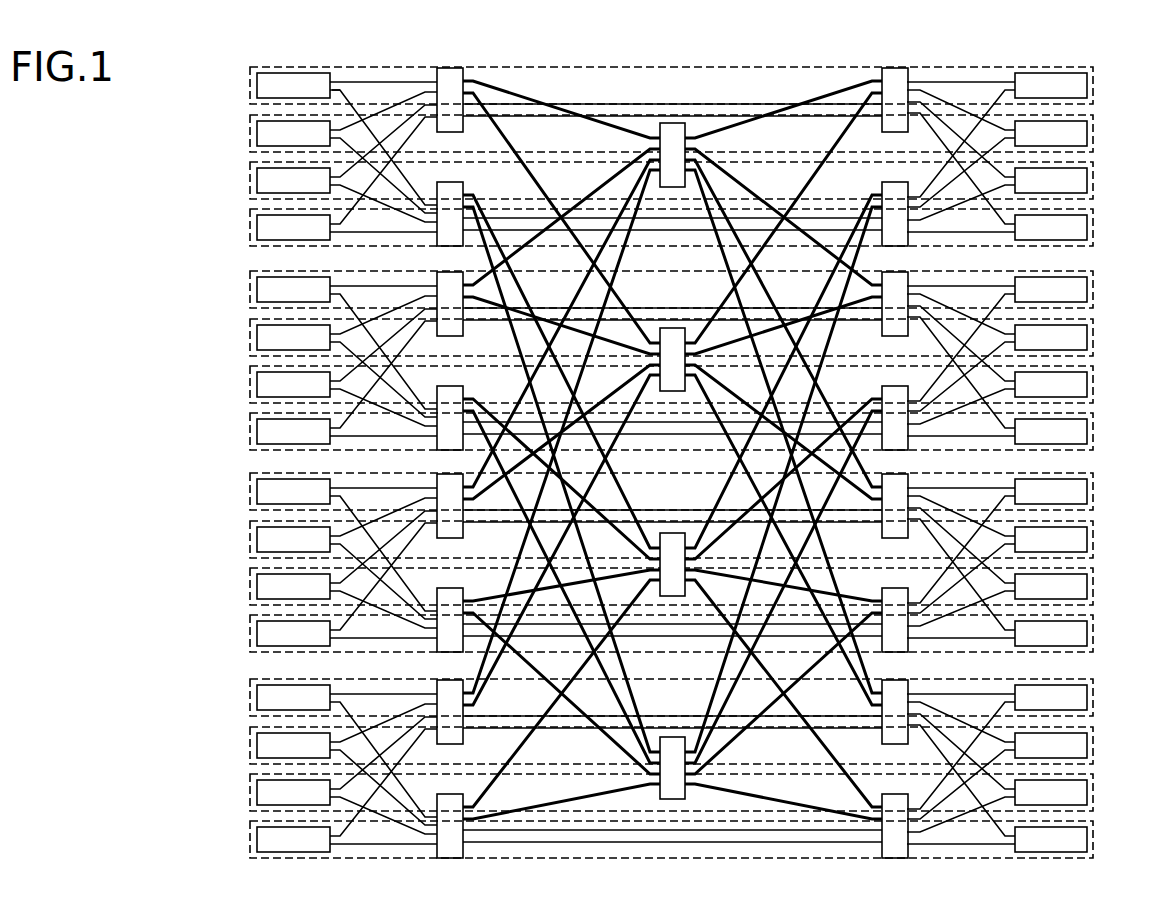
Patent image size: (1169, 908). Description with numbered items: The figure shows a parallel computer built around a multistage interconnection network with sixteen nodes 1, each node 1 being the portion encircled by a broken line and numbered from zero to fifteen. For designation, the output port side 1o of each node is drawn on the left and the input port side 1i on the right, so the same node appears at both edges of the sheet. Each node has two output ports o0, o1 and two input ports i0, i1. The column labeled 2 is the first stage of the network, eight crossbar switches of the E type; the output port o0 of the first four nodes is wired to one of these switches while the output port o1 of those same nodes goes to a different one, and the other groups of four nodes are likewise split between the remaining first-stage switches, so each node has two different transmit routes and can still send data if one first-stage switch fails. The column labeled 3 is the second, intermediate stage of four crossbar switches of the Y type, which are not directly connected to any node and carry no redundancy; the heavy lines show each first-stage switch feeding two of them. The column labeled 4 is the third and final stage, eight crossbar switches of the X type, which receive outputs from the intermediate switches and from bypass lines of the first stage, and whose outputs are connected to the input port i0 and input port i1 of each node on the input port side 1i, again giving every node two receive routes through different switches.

The node 1 is at (553, 67).
The output port side 1o is at (250, 86).
The input port side 1i is at (1093, 82).
The first stage 2 is at (450, 68).
The second stage 3 is at (673, 123).
The third stage 4 is at (892, 67).
The output port o0 is at (338, 83).
The output port o1 is at (336, 90).
The input port i0 is at (1012, 83).
The input port i1 is at (1009, 90).